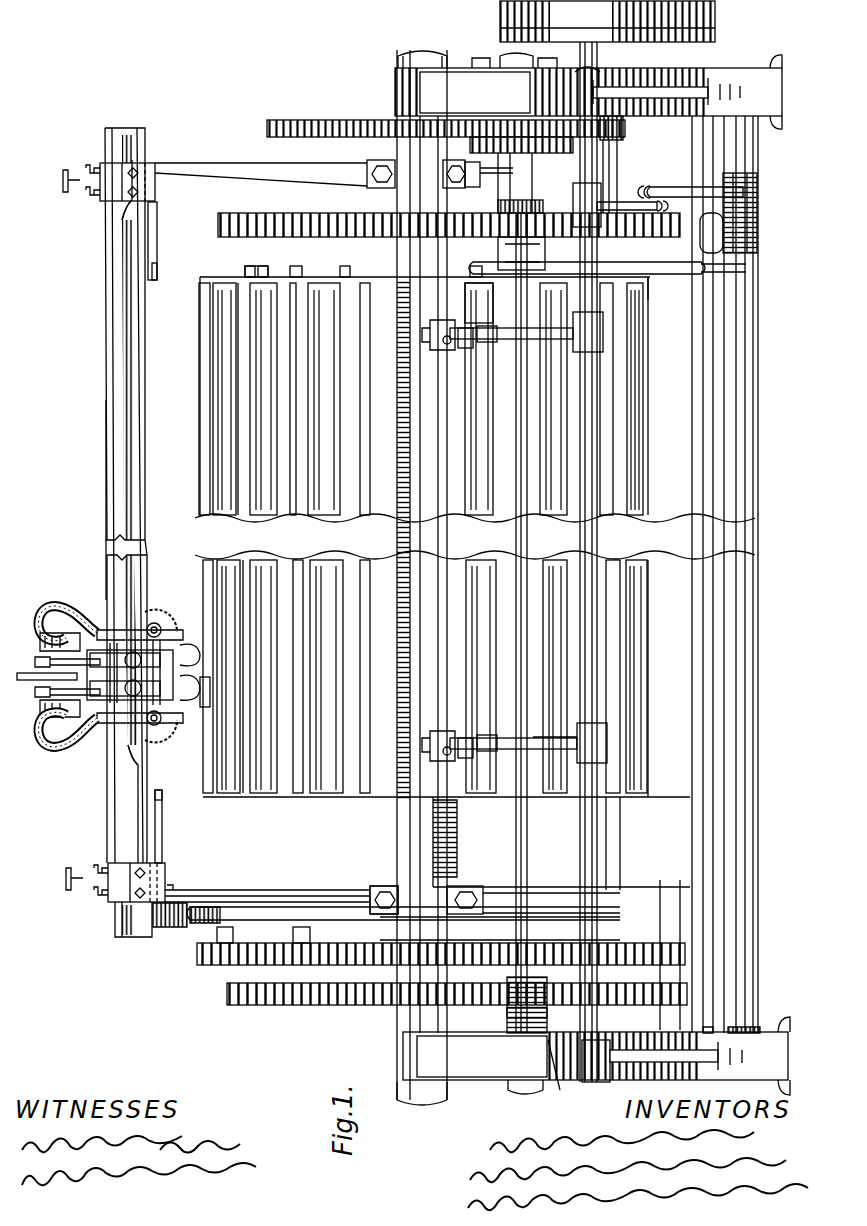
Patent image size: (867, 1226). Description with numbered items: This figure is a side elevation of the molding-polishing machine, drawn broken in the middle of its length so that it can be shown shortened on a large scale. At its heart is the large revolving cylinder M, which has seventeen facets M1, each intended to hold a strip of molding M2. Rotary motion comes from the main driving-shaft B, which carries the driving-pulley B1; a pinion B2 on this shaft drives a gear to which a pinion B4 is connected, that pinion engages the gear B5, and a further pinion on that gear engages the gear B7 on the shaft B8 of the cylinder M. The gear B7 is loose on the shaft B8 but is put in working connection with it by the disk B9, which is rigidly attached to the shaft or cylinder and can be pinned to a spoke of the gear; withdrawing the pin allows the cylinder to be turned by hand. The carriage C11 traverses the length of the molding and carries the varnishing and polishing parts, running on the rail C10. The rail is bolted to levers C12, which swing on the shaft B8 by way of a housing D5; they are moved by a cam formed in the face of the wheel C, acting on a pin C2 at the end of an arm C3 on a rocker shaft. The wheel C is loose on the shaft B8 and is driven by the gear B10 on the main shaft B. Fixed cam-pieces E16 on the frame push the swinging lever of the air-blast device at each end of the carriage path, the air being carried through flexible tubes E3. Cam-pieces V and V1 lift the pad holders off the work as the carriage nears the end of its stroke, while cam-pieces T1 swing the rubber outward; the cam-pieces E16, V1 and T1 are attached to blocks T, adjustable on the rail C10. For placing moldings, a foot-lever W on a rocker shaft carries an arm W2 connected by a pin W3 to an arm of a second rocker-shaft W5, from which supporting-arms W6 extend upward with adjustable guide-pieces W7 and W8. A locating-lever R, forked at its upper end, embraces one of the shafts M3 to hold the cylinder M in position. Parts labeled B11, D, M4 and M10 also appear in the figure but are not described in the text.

The main driving-shaft B is at (620, 825).
The driving-pulley B1 is at (607, 21).
The pinion B2 is at (642, 152).
The pinion B4 is at (521, 175).
The gear B5 is at (489, 181).
The gear B7 is at (588, 92).
The shaft of the cylinder B8 is at (425, 50).
The disk B9 is at (335, 137).
The gear B10 is at (615, 623).
The bearing B11 is at (618, 164).
The wheel C is at (442, 612).
The pin C2 is at (557, 1074).
The arm C3 is at (510, 1017).
The rail C10 is at (93, 500).
The carriage C11 is at (108, 674).
The levers C12 is at (300, 893).
The rod D is at (394, 927).
The housing D5 is at (380, 887).
The flexible tubes E3 is at (67, 740).
The fixed cam-pieces E16 is at (78, 530).
The revolving cylinder M is at (729, 574).
The facets M1 is at (483, 538).
The strip of molding M2 is at (418, 538).
The shafts M3 is at (286, 260).
The roller M4 is at (478, 303).
The bracket M10 is at (478, 272).
The locating-lever R is at (630, 390).
The blocks T is at (129, 532).
The cam-pieces T1 is at (141, 532).
The cam-piece V is at (134, 791).
The cam-piece V1 is at (128, 217).
The foot-lever W is at (752, 258).
The arm W2 is at (658, 188).
The pin W3 is at (655, 200).
The second rocker-shaft W5 is at (590, 373).
The supporting-arms W6 is at (562, 791).
The adjustable guide-piece W7 is at (486, 552).
The adjustable guide-piece W8 is at (497, 540).